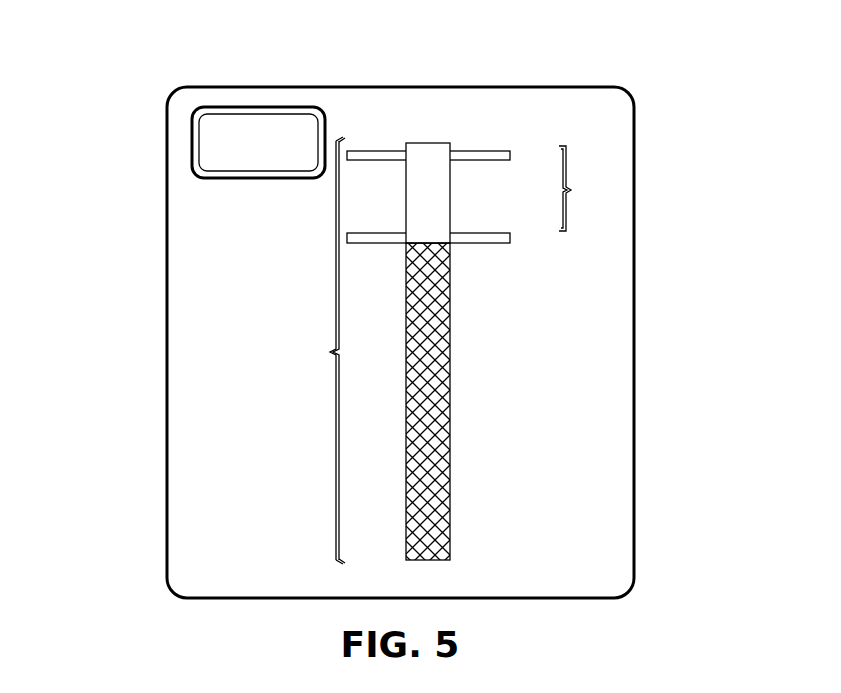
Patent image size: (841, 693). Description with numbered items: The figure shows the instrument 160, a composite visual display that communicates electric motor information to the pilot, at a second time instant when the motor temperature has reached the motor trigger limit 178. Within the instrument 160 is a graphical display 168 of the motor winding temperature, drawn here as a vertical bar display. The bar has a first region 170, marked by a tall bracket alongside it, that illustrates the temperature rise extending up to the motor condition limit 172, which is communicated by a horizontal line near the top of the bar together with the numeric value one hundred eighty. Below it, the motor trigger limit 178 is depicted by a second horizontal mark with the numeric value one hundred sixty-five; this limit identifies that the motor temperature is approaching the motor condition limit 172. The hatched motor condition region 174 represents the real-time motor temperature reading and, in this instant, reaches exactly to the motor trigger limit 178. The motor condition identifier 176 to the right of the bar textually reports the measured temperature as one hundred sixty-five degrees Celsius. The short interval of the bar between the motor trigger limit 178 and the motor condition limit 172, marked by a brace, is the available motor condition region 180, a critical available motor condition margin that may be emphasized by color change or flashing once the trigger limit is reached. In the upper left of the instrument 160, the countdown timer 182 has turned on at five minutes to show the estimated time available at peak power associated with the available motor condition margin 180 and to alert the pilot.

The instrument 160 is at (134, 253).
The graphical display 168 is at (483, 291).
The motor condition limit 172 is at (539, 139).
The motor condition region 174 is at (441, 466).
The motor condition identifier 176 is at (594, 368).
The motor trigger limit 178 is at (532, 251).
The available motor condition region 180 is at (570, 197).
The countdown timer 182 is at (258, 171).
The first region 170 is at (310, 350).